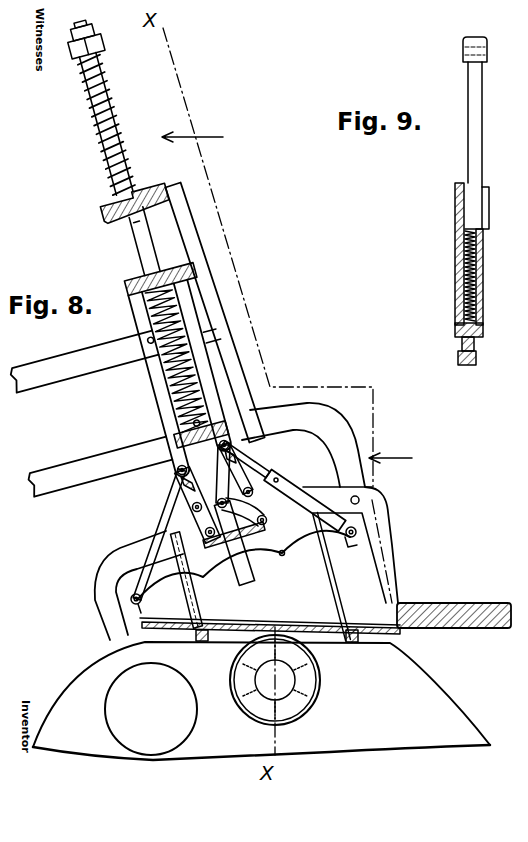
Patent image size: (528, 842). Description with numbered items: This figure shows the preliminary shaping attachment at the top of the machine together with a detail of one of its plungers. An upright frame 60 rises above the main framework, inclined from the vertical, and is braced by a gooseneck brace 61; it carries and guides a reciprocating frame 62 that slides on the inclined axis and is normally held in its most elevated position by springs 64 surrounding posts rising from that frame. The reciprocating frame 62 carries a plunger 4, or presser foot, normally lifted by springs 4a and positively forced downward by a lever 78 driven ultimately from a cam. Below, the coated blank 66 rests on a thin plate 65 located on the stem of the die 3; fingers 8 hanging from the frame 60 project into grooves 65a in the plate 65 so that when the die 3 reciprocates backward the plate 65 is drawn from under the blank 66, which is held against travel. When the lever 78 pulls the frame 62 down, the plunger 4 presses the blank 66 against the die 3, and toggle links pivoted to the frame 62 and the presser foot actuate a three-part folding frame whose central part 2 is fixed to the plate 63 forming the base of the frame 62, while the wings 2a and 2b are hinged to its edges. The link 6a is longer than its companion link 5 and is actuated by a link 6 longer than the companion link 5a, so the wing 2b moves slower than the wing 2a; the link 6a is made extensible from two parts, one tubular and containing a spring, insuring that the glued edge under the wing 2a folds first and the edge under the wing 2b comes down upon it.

In FIG. 8, the springs 64 is at (122, 99).
In FIG. 8, the reciprocating frame 62 is at (194, 297).
In FIG. 8, the springs 4a is at (218, 357).
In FIG. 8, the lever 78 is at (82, 368).
In FIG. 8, the gooseneck brace 61 is at (88, 464).
In FIG. 8, the plunger 4 is at (173, 473).
In FIG. 8, the link 5 is at (172, 523).
In FIG. 8, the link 5a is at (196, 522).
In FIG. 8, the link 6 is at (241, 489).
In FIG. 8, the plate 63 is at (264, 533).
In FIG. 8, the link 6a is at (280, 471).
In FIG. 9, the link 6a is at (480, 182).
In FIG. 8, the central part of folding frame 2 is at (279, 556).
In FIG. 8, the wing 2a is at (143, 600).
In FIG. 8, the wing 2b is at (297, 562).
In FIG. 8, the fingers 8 is at (341, 598).
In FIG. 8, the frame 60 is at (397, 542).
In FIG. 8, the blank 66 is at (248, 624).
In FIG. 8, the plate 65 is at (206, 639).
In FIG. 8, the grooves 65a is at (362, 660).
In FIG. 8, the die 3 is at (321, 683).